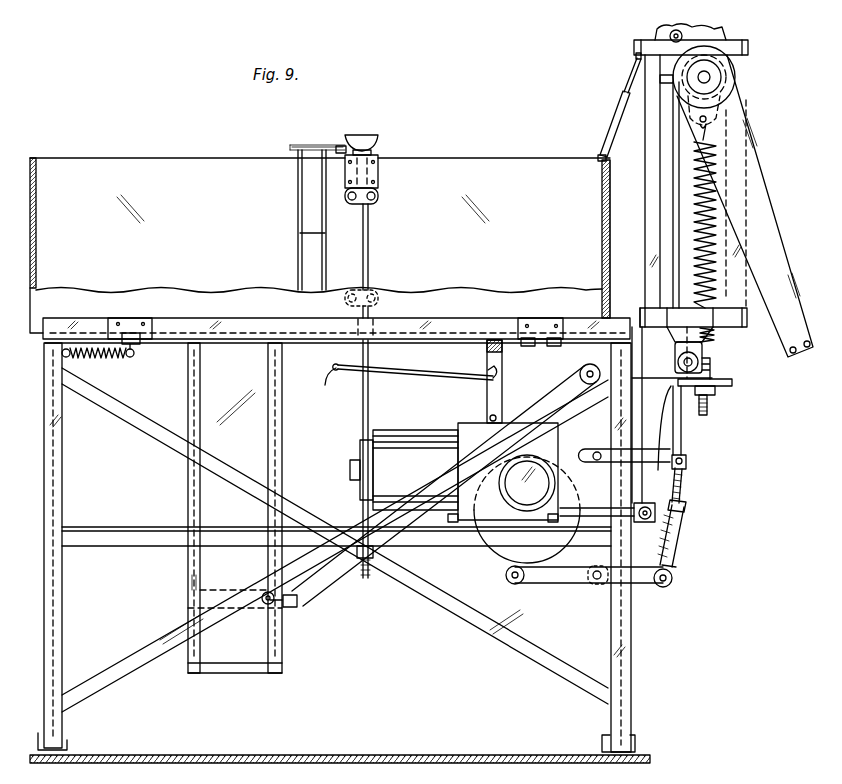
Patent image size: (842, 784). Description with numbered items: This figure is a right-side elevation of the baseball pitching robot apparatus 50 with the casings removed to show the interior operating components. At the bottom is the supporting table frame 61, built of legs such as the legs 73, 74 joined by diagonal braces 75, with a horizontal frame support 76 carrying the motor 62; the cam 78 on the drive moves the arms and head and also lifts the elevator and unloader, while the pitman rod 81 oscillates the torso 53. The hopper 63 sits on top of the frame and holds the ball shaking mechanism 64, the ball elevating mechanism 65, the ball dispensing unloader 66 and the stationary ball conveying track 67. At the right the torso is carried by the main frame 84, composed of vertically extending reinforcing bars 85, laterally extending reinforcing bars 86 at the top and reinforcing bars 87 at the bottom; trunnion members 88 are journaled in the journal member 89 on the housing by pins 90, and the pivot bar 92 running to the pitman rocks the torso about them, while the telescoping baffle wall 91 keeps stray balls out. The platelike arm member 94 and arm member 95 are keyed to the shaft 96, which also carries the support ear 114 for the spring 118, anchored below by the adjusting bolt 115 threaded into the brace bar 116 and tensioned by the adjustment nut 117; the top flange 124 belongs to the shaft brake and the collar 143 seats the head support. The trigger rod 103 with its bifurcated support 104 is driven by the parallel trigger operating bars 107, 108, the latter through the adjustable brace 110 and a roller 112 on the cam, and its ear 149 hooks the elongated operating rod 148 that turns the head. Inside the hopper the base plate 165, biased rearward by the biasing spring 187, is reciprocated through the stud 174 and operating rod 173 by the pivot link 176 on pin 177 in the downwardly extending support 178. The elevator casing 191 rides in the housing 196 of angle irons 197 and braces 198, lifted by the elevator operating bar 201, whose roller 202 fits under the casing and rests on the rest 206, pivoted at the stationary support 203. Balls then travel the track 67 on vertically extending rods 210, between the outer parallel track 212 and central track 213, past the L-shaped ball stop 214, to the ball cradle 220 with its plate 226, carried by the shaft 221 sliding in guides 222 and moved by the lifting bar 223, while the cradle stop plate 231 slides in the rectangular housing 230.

The baseball pitching robot apparatus 50 is at (720, 577).
The torso 53 is at (630, 255).
The supporting table frame 61 is at (633, 665).
The motor 62 is at (372, 452).
The hopper 63 is at (138, 172).
The ball shaking mechanism 64 is at (330, 386).
The ball elevating mechanism 65 is at (288, 616).
The ball dispensing unloader 66 is at (391, 154).
The stationary ball conveying track 67 is at (312, 144).
The supporting leg 73 is at (617, 722).
The supporting leg 74 is at (58, 712).
The diagonal brace 75 is at (115, 660).
The horizontal frame support 76 is at (117, 527).
The cam 78 is at (495, 560).
The pitman rod 81 is at (592, 509).
The main frame 84 is at (645, 212).
The vertically extending reinforcing bar 85 is at (650, 235).
The laterally extending reinforcing bar 86 is at (748, 48).
The reinforcing bar 87 is at (640, 317).
The trunnion member 88 is at (705, 321).
The journal member 89 is at (650, 347).
The pin 90 is at (675, 362).
The telescoping baffle wall 91 is at (622, 96).
The pivot bar 92 is at (648, 487).
The elongated platelike arm member 94 is at (748, 41).
The arm member 95 is at (783, 260).
The shaft 96 is at (711, 77).
The trigger rod 103 is at (672, 170).
The bifurcated support 104 is at (666, 101).
The trigger operating bar 107 is at (576, 449).
The trigger operating bar 108 is at (557, 580).
The adjustable brace 110 is at (674, 553).
The roller 112 is at (513, 586).
The support ear 114 is at (715, 117).
The adjusting bolt 115 is at (709, 414).
The brace bar 116 is at (734, 383).
The adjustment nut 117 is at (716, 393).
The spring 118 is at (714, 215).
The top flange 124 is at (660, 78).
The collar 143 is at (670, 48).
The elongated operating rod 148 is at (675, 143).
The ear 149 is at (687, 457).
The base plate 165 is at (170, 346).
The operating rod 173 is at (405, 380).
The stud 174 is at (334, 364).
The pivot link 176 is at (500, 395).
The pin 177 is at (489, 416).
The downwardly extending support 178 is at (488, 357).
The biasing spring 187 is at (97, 360).
The box-like casing 191 is at (186, 470).
The housing 196 is at (187, 567).
The angle iron 197 is at (187, 582).
The brace 198 is at (228, 668).
The elevator operating bar 201 is at (557, 389).
The roller 202 is at (263, 610).
The stationary support 203 is at (597, 365).
The rest 206 is at (203, 630).
The vertically extending rod 210 is at (325, 233).
The outer parallel track 212 is at (300, 146).
The central track 213 is at (302, 160).
The L-shaped ball stop 214 is at (330, 160).
The ball cradle 220 is at (380, 140).
The shaft 221 is at (369, 258).
The guide 222 is at (378, 202).
The lifting bar 223 is at (355, 553).
The plate 226 is at (362, 134).
The rectangular housing 230 is at (379, 176).
The cradle stop plate 231 is at (346, 144).